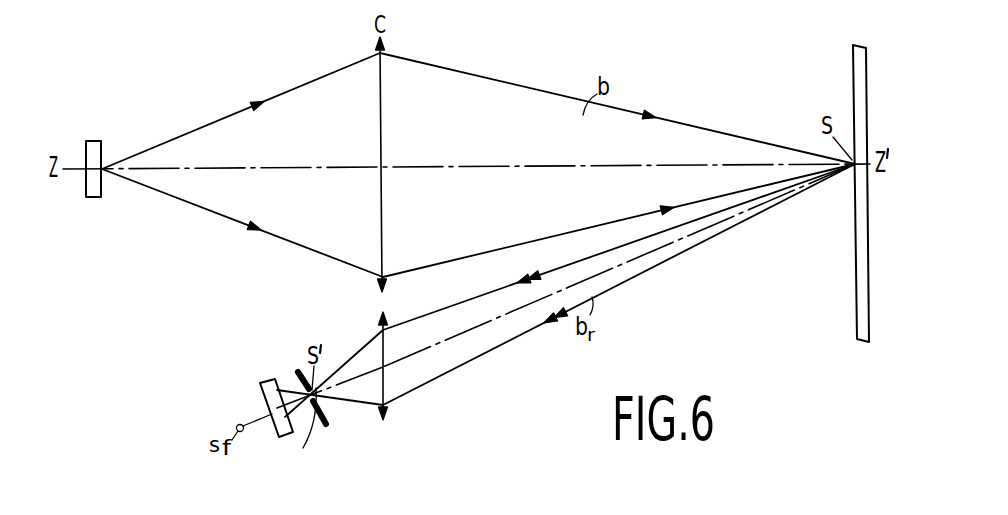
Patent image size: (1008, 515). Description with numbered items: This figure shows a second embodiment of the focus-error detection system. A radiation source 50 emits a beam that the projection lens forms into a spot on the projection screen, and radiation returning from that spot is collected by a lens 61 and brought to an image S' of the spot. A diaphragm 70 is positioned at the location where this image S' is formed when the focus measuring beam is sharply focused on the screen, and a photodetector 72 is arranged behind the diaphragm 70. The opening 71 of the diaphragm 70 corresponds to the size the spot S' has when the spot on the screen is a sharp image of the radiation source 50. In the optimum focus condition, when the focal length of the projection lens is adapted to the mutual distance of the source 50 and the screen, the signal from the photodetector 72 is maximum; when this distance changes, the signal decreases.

The radiation source 50 is at (95, 140).
The lens 61 is at (388, 384).
The diaphragm 70 is at (328, 423).
The opening of the diaphragm 71 is at (315, 434).
The photodetector 72 is at (282, 438).